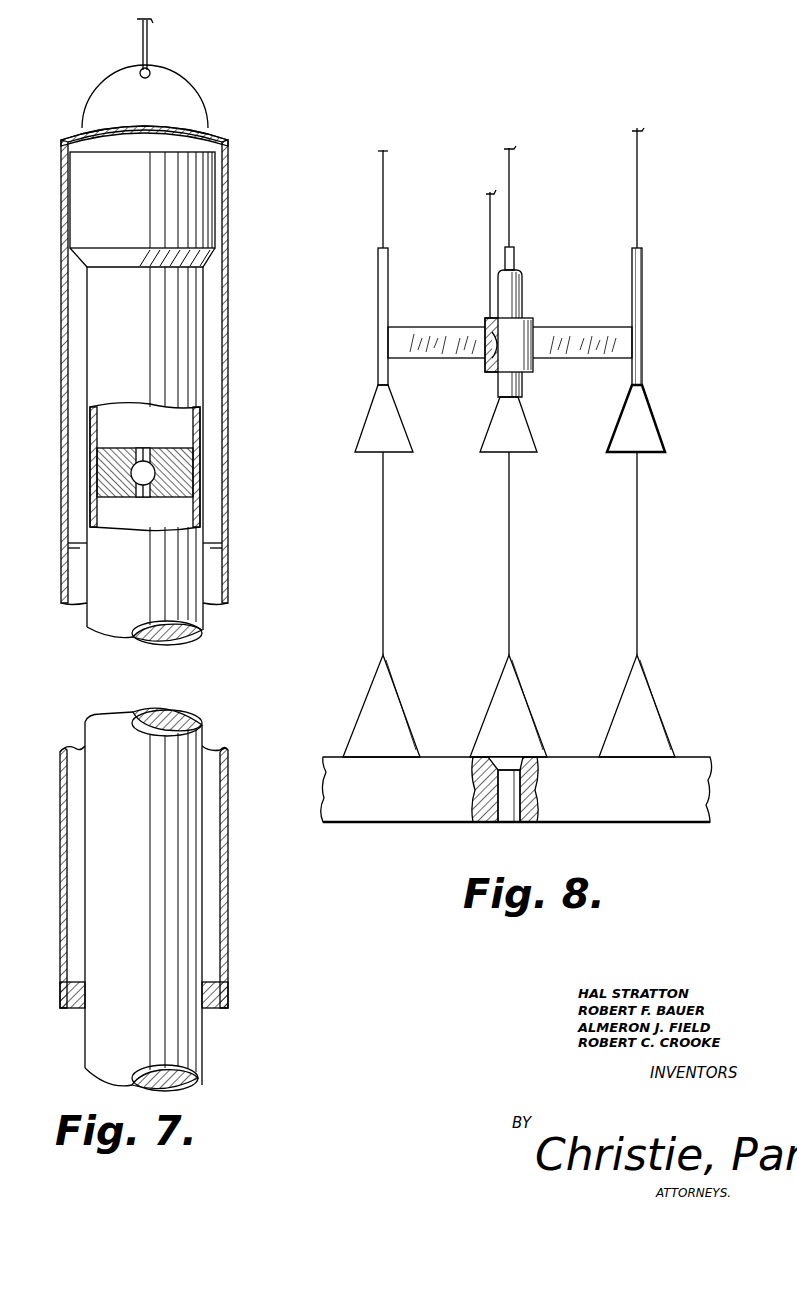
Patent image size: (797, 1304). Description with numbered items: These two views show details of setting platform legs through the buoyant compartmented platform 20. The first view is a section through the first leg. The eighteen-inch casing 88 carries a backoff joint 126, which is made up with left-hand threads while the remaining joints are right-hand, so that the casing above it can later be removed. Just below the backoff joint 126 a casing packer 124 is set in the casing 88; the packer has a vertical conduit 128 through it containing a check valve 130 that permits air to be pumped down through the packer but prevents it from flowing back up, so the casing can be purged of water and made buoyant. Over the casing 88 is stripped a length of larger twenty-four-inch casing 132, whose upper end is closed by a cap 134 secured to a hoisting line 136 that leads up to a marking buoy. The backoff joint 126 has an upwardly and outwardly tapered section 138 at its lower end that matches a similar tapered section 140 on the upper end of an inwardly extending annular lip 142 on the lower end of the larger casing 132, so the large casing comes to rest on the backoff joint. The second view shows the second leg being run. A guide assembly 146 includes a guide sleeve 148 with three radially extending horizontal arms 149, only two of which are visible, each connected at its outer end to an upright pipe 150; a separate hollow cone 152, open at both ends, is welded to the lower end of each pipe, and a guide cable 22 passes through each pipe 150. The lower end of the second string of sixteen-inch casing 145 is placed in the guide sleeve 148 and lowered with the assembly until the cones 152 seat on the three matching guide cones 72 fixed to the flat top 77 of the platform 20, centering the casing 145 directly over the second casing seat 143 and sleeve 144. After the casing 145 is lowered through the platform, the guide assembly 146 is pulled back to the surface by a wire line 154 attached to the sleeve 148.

In FIG. 7, the hoisting line 136 is at (150, 48).
In FIG. 7, the cap 134 is at (64, 135).
In FIG. 7, the backoff joint 126 is at (203, 185).
In FIG. 7, the tapered section 138 is at (212, 256).
In FIG. 7, the 24-inch casing 132 is at (229, 448).
In FIG. 7, the casing packer 124 is at (118, 440).
In FIG. 7, the vertical conduit 128 is at (145, 448).
In FIG. 7, the check valve 130 is at (145, 497).
In FIG. 7, the tapered section 140 is at (208, 985).
In FIG. 7, the annular lip 142 is at (208, 1010).
In FIG. 7, the 18-inch casing 88 is at (203, 1066).
In FIG. 8, the guide cables 22 is at (383, 534).
In FIG. 8, the upright pipe 150 is at (388, 272).
In FIG. 8, the hollow cone 152 is at (660, 430).
In FIG. 8, the guide assembly 146 is at (446, 322).
In FIG. 8, the horizontal arms 149 is at (404, 328).
In FIG. 8, the 16-inch casing 145 is at (523, 300).
In FIG. 8, the guide sleeve 148 is at (528, 320).
In FIG. 8, the wire line 154 is at (488, 222).
In FIG. 8, the guide cones 72 is at (485, 720).
In FIG. 8, the compartmented platform 20 is at (424, 830).
In FIG. 8, the flat top 77 is at (325, 758).
In FIG. 8, the casing seat 143 is at (522, 757).
In FIG. 8, the sleeve 144 is at (517, 790).